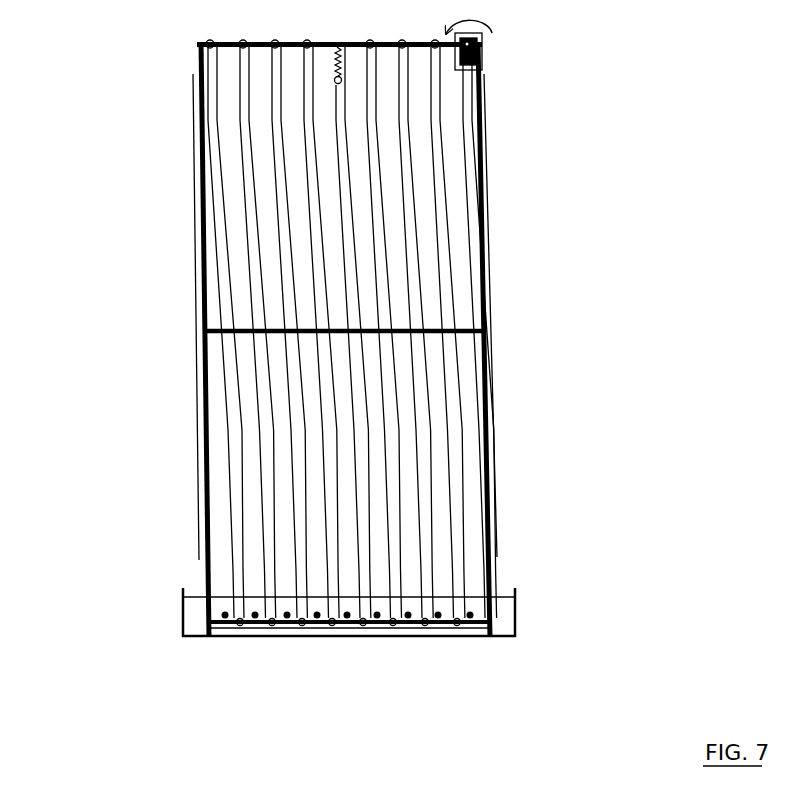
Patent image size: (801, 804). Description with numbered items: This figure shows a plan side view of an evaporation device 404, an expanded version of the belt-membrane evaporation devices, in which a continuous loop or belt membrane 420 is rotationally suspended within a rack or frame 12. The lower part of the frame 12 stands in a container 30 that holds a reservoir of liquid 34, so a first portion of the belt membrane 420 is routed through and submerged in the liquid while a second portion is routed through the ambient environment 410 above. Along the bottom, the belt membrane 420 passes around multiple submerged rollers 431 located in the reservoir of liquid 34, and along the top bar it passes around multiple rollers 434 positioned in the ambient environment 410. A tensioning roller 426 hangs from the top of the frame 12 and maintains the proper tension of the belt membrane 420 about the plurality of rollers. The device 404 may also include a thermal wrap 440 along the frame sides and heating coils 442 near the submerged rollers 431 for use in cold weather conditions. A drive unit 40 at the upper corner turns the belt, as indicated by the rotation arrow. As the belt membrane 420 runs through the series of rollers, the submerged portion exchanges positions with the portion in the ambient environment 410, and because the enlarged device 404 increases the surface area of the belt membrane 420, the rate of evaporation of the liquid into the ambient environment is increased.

The evaporation device 404 is at (100, 110).
The frame 12 is at (197, 52).
The rollers 434 is at (310, 44).
The motor 40 is at (486, 48).
The tensioning roller 426 is at (346, 70).
The belt membrane 420 is at (482, 160).
The thermal wrap 440 is at (494, 367).
The ambient environment 410 is at (147, 362).
The reservoir of liquid 34 is at (503, 593).
The container 30 is at (518, 616).
The submerged rollers 431 is at (363, 628).
The heating coils 442 is at (443, 624).